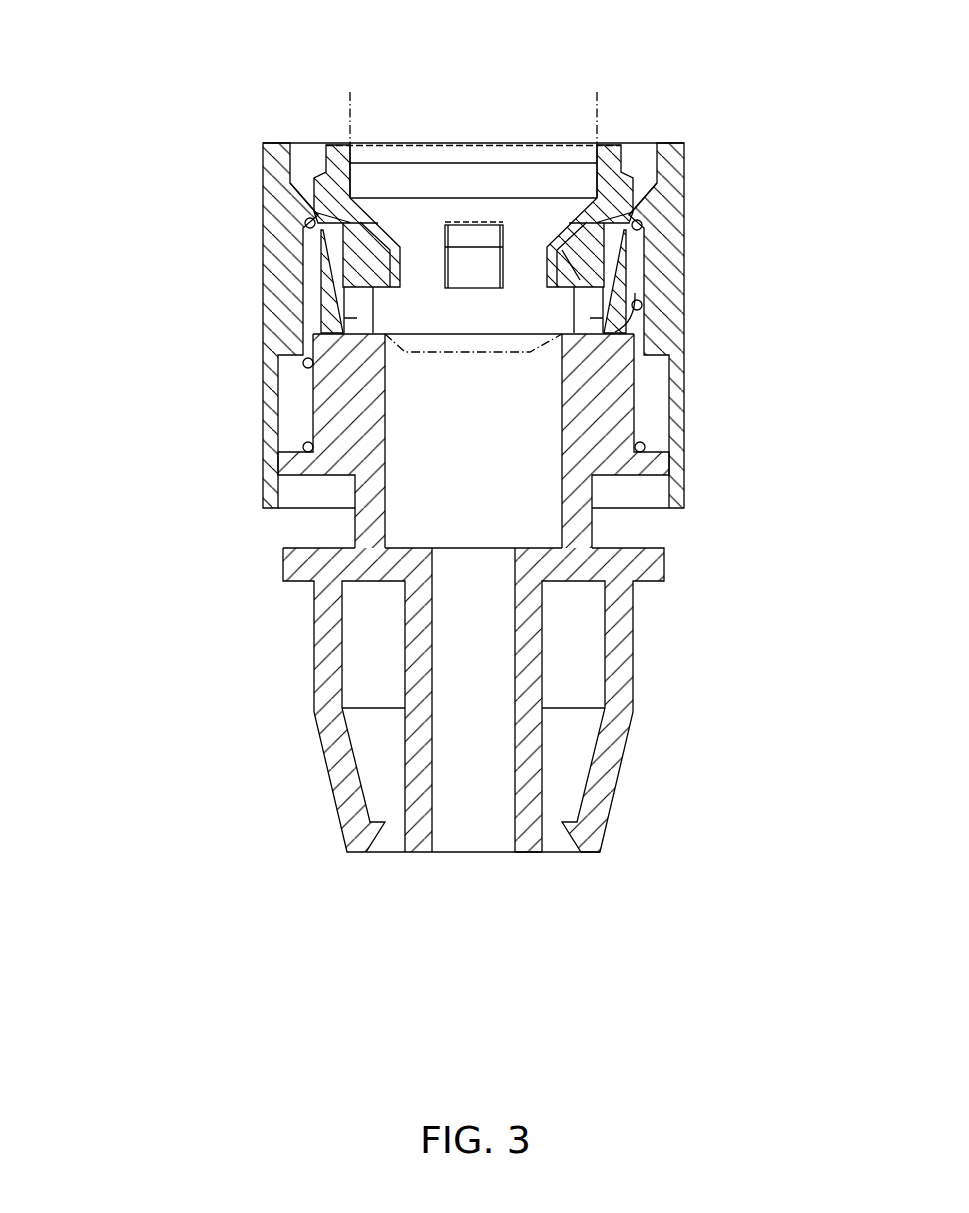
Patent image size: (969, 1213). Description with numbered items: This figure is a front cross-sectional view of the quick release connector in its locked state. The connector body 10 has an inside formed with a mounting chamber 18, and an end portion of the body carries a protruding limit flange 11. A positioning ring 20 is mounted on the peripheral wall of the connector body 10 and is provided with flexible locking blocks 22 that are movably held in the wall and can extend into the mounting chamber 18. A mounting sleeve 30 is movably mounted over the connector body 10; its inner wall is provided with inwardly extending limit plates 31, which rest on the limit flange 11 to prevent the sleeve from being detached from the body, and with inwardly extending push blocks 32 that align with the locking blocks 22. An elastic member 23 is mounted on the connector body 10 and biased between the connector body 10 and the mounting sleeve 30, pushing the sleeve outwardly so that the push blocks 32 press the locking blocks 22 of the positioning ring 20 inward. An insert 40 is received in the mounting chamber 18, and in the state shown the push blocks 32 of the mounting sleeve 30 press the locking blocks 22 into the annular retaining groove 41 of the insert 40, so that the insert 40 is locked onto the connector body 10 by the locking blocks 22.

The connector body 10 is at (281, 626).
The limit flange 11 is at (612, 235).
The mounting chamber 18 is at (407, 200).
The positioning ring 20 is at (337, 334).
The locking blocks 22 is at (473, 235).
The elastic member 23 is at (290, 453).
The mounting sleeve 30 is at (705, 143).
The limit plates 31 is at (640, 203).
The push blocks 32 is at (634, 292).
The insert 40 is at (540, 354).
The retaining groove 41 is at (548, 258).